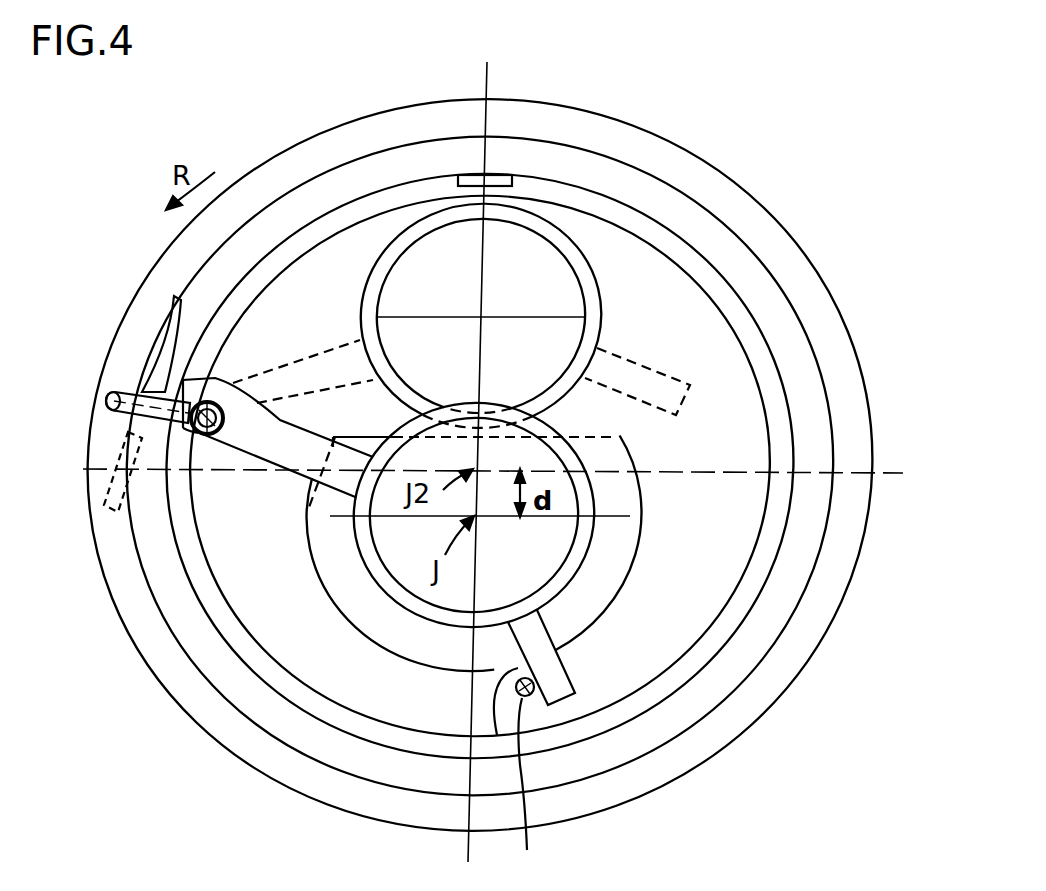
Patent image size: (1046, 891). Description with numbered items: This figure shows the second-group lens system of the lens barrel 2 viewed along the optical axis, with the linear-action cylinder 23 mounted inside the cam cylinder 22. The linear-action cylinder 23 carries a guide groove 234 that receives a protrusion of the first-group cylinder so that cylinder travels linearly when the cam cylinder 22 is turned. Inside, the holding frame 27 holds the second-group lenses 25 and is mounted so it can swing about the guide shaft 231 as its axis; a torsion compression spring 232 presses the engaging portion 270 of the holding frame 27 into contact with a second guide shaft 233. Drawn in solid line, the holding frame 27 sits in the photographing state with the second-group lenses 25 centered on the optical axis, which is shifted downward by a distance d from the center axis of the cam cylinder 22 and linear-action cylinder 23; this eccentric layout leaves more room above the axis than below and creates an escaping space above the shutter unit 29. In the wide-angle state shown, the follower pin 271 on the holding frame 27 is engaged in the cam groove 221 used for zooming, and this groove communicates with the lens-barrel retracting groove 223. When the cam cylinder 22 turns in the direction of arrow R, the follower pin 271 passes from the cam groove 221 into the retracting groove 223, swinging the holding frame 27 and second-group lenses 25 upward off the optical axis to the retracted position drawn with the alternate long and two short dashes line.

The housing 2 is at (634, 122).
The cam cylinder 22 is at (712, 192).
The linear-action cylinder 23 is at (738, 298).
The guide groove 234 is at (470, 172).
The follower pin 271 is at (150, 315).
The lens-barrel retracting groove 223 is at (160, 375).
The cam groove 221 is at (114, 392).
The guide shaft 231 is at (225, 397).
The torsion compression spring 232 is at (255, 452).
The holding frame 27 is at (597, 290).
The shutter unit 29 is at (620, 455).
The second-group lenses 25 is at (542, 552).
The engaging portion 270 is at (562, 677).
The guide shaft 233 is at (525, 777).